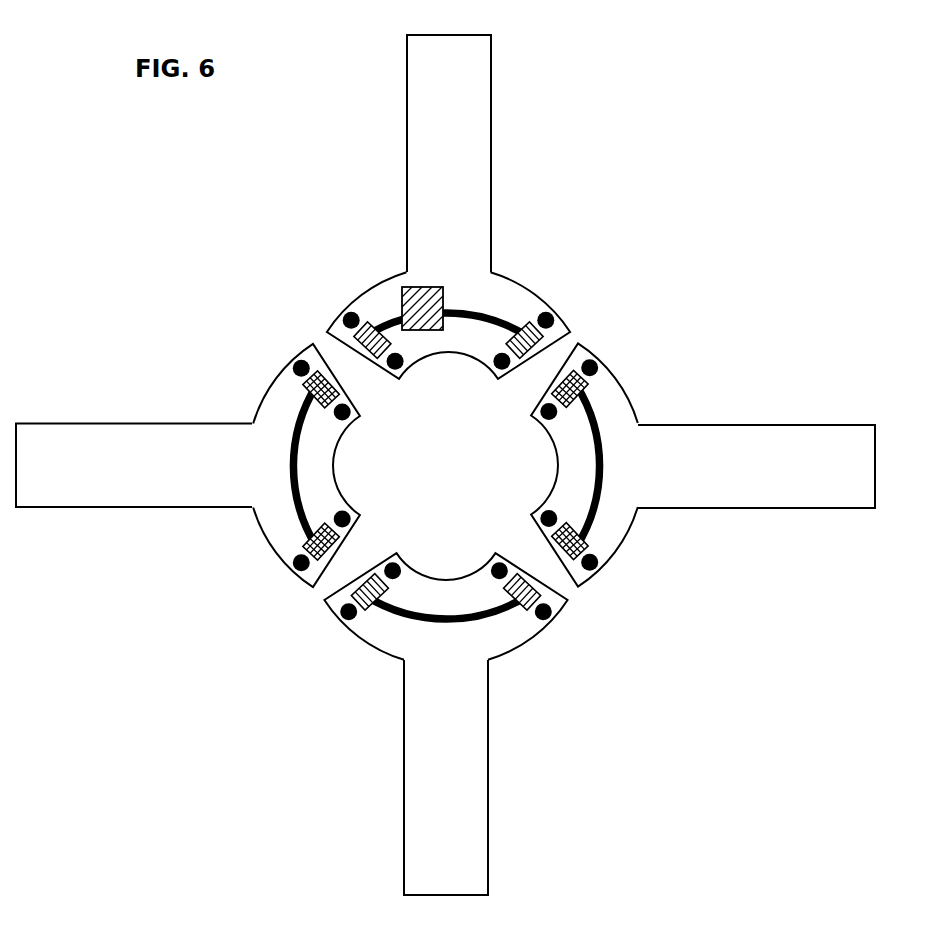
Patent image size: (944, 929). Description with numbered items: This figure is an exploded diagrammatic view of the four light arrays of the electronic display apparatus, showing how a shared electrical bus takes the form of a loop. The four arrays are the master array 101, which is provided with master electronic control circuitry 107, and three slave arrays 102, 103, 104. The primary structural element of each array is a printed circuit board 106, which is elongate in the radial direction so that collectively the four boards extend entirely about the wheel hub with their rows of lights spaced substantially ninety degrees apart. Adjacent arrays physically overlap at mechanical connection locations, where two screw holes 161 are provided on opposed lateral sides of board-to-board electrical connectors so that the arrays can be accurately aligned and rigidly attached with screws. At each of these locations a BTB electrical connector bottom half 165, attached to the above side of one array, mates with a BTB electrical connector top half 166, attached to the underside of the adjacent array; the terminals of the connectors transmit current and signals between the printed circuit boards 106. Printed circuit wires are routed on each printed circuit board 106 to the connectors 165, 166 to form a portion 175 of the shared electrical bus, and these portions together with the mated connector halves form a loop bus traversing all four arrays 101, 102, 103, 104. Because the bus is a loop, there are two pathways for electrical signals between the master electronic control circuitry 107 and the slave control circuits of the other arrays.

The master array 101 is at (500, 186).
The slave array 102 is at (723, 415).
The slave array 103 is at (500, 761).
The slave array 104 is at (133, 517).
The printed circuit board 106 is at (492, 125).
The master electronic control circuitry 107 is at (402, 292).
The screw hole 161 is at (290, 367).
The BTB electrical connector bottom half 165 is at (308, 533).
The BTB electrical connector top half 166 is at (517, 600).
The portion of shared electrical bus 175 is at (595, 510).